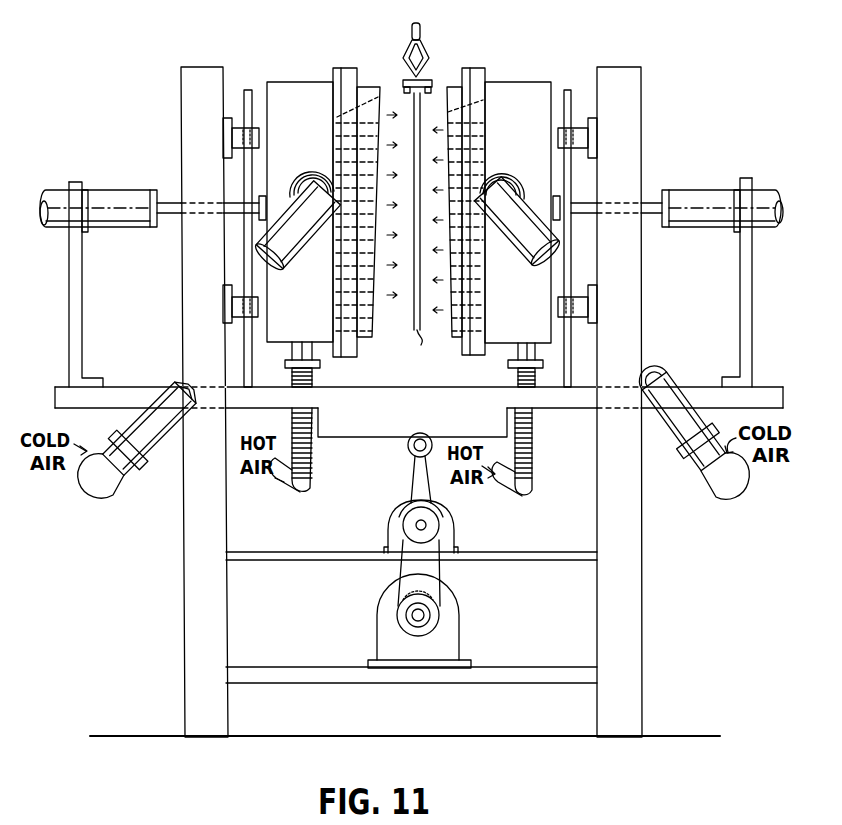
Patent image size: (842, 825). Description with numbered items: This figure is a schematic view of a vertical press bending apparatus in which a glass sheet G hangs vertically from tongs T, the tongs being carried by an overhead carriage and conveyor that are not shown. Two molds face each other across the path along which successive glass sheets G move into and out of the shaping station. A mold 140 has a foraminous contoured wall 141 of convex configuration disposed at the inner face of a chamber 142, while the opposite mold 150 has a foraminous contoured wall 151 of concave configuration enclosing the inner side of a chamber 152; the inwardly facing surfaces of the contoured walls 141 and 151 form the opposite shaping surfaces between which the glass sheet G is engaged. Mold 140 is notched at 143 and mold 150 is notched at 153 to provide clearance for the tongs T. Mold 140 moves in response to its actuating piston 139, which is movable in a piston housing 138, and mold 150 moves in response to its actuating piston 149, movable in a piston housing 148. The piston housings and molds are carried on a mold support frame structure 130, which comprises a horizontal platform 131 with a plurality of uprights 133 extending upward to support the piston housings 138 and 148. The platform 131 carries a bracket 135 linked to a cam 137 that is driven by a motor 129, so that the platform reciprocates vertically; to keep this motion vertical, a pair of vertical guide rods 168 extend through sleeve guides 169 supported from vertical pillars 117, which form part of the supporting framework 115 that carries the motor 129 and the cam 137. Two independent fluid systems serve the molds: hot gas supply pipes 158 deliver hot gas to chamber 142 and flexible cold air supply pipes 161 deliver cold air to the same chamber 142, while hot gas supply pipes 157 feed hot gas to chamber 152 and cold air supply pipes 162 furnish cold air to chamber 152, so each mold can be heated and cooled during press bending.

The supporting framework 115 is at (255, 560).
The vertical pillars 117 is at (183, 656).
The motor 129 is at (380, 621).
The mold support frame structure 130 is at (62, 299).
The horizontal platform 131 is at (58, 394).
The uprights 133 is at (82, 318).
The bracket 135 is at (420, 435).
The cam 137 is at (410, 513).
The piston housing 138 is at (704, 190).
The actuating piston 139 is at (653, 200).
The mold 140 is at (492, 205).
The foraminous contoured wall 141 is at (460, 338).
The chamber 142 is at (526, 151).
The notch 143 is at (455, 87).
The piston housing 148 is at (112, 190).
The actuating piston 149 is at (170, 203).
The mold 150 is at (332, 203).
The foraminous contoured wall 151 is at (366, 338).
The chamber 152 is at (306, 141).
The notch 153 is at (370, 86).
The hot gas supply pipes 157 is at (303, 502).
The hot gas supply pipes 158 is at (530, 484).
The cold air supply pipes 161 is at (520, 250).
The cold air supply pipes 162 is at (297, 250).
The vertical guide rods 168 is at (248, 90).
The sleeve guides 169 is at (241, 133).
The tongs T is at (438, 57).
The glass sheet G is at (415, 354).